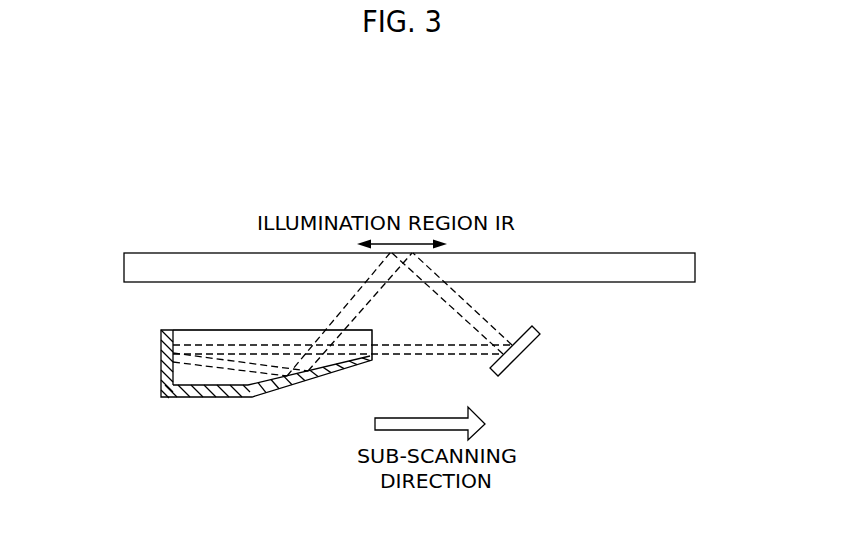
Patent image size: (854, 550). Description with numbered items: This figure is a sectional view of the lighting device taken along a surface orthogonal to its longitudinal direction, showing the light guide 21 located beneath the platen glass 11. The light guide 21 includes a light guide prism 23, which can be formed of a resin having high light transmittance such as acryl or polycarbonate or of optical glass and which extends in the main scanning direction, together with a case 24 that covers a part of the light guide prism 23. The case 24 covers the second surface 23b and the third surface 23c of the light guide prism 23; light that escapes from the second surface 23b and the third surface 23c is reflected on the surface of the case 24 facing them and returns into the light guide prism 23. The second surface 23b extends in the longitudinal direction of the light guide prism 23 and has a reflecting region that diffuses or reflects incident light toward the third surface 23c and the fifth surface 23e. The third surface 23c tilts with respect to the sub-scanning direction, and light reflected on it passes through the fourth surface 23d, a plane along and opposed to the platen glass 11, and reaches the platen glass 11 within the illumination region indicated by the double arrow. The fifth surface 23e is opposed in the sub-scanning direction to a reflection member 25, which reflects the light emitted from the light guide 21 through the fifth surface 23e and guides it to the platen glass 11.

The platen glass 11 is at (607, 265).
The light guide 21 is at (261, 397).
The light guide prism 23 is at (261, 385).
The second surface 23b is at (170, 373).
The third surface 23c is at (303, 380).
The fourth surface 23d is at (342, 326).
The fifth surface 23e is at (372, 348).
The case 24 is at (166, 344).
The reflection member 25 is at (519, 351).